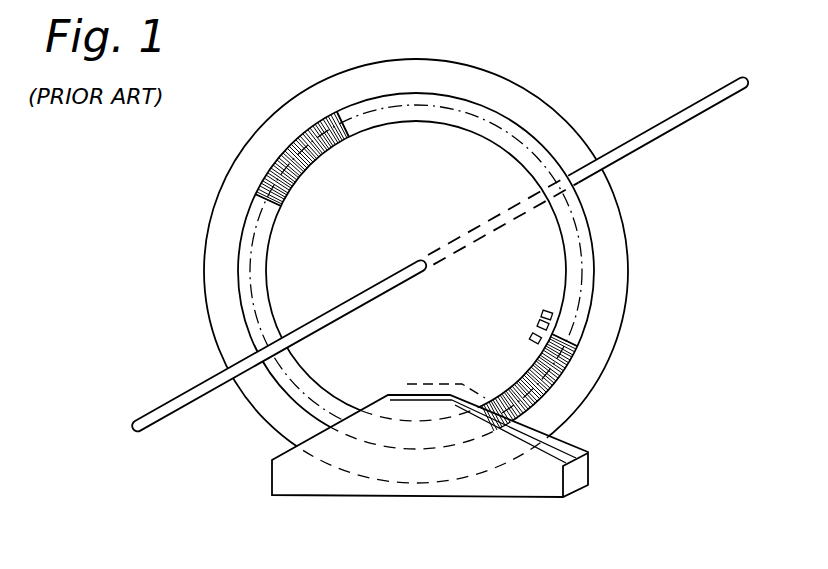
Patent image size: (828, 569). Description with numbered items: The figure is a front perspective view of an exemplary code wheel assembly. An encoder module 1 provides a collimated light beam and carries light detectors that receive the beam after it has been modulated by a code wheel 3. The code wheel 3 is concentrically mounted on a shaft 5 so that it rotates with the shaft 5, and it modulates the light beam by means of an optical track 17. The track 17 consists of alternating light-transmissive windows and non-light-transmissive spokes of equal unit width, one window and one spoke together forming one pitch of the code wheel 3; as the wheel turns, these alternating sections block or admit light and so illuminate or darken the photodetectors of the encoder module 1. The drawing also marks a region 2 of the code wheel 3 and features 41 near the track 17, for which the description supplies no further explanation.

The encoder module 1 is at (590, 472).
The first coil 2 is at (342, 158).
The code wheel 3 is at (615, 202).
The shaft 5 is at (698, 122).
The optical track 17 is at (560, 386).
The sensing elements 41 is at (538, 315).